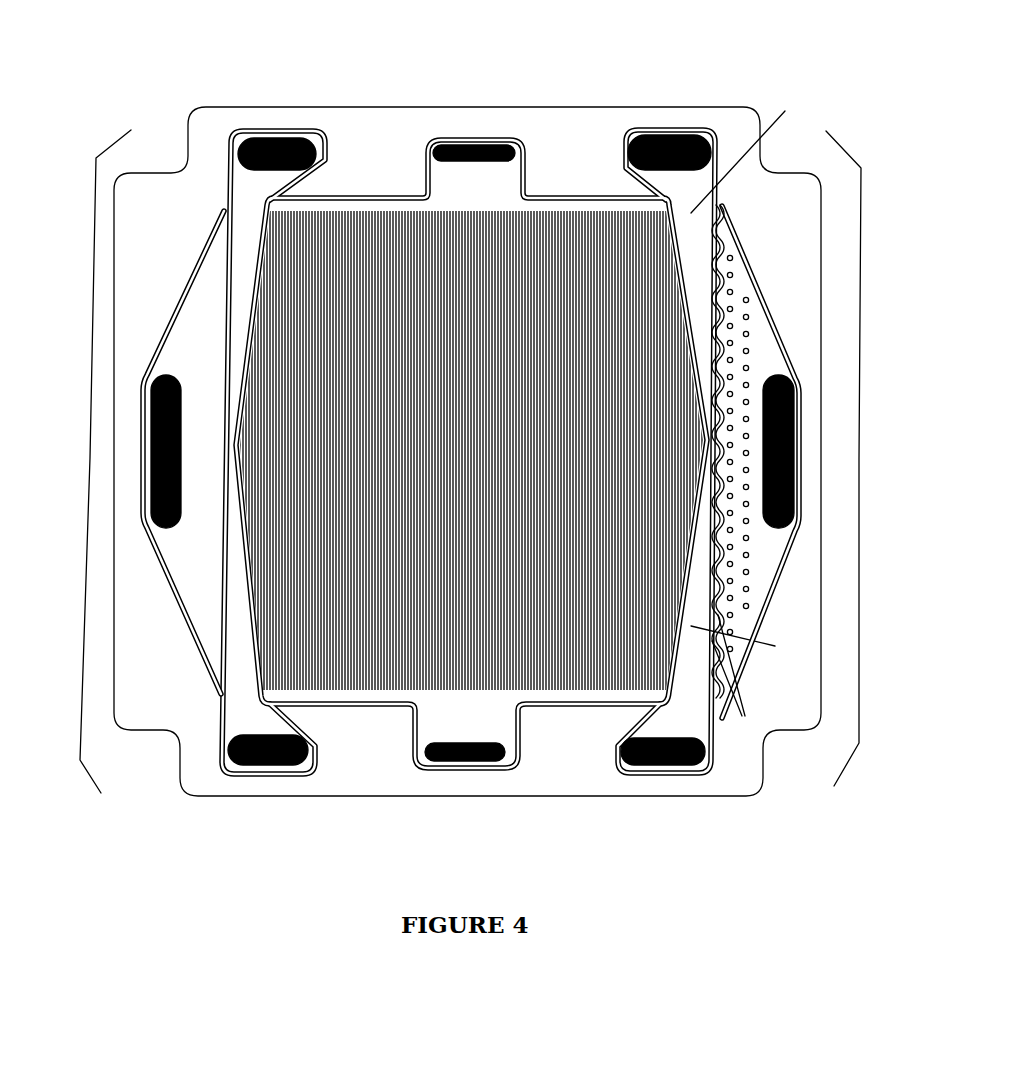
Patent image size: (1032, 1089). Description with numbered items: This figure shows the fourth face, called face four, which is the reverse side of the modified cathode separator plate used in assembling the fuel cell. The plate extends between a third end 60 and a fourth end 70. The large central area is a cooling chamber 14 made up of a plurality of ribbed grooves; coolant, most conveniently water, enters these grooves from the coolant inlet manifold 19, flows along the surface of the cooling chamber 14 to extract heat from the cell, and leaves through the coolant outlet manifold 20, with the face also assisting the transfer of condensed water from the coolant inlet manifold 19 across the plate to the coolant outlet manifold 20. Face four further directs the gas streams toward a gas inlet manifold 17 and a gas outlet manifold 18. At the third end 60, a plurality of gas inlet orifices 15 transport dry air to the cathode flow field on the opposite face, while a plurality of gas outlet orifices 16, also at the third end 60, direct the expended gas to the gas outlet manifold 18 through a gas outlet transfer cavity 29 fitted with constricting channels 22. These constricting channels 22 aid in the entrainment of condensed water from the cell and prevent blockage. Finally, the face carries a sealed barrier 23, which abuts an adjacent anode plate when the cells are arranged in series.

The cooling chamber 14 is at (405, 598).
The gas inlet orifices 15 is at (716, 231).
The gas outlet orifices 16 is at (753, 676).
The gas inlet manifold 17 is at (670, 148).
The gas outlet manifold 18 is at (781, 415).
The coolant inlet manifold 19 is at (456, 756).
The coolant outlet manifold 20 is at (466, 146).
The constricting channels 22 is at (742, 306).
The sealed barrier 23 is at (712, 567).
The gas outlet transfer cavity 29 is at (748, 554).
The third end 60 is at (852, 395).
The fourth end 70 is at (143, 460).